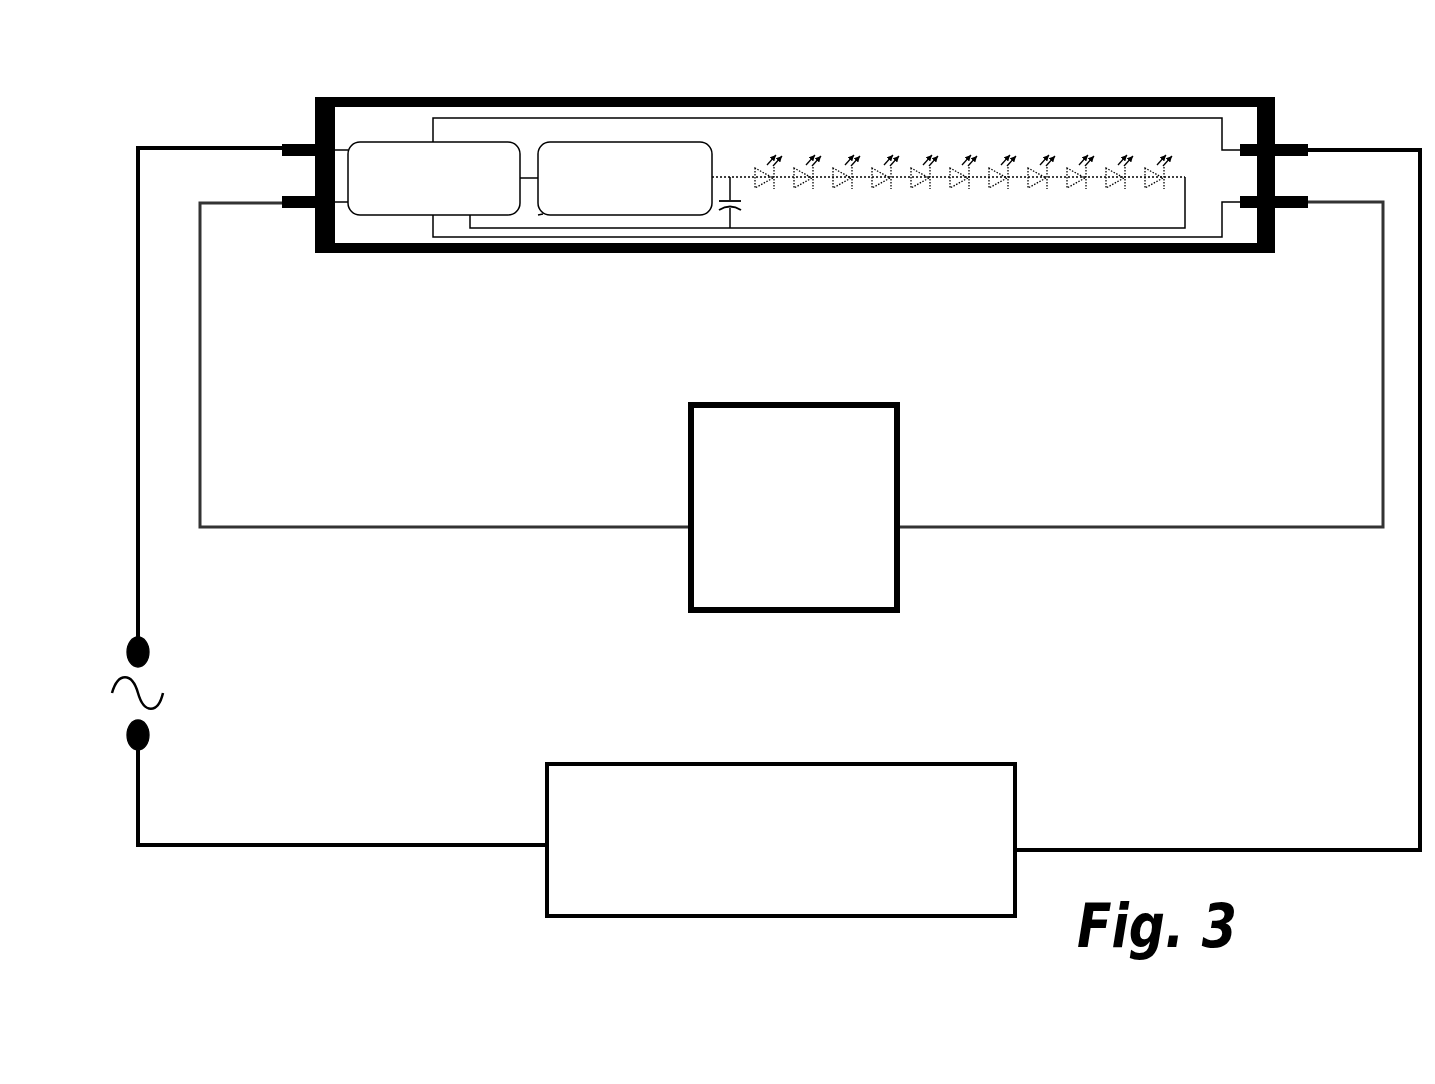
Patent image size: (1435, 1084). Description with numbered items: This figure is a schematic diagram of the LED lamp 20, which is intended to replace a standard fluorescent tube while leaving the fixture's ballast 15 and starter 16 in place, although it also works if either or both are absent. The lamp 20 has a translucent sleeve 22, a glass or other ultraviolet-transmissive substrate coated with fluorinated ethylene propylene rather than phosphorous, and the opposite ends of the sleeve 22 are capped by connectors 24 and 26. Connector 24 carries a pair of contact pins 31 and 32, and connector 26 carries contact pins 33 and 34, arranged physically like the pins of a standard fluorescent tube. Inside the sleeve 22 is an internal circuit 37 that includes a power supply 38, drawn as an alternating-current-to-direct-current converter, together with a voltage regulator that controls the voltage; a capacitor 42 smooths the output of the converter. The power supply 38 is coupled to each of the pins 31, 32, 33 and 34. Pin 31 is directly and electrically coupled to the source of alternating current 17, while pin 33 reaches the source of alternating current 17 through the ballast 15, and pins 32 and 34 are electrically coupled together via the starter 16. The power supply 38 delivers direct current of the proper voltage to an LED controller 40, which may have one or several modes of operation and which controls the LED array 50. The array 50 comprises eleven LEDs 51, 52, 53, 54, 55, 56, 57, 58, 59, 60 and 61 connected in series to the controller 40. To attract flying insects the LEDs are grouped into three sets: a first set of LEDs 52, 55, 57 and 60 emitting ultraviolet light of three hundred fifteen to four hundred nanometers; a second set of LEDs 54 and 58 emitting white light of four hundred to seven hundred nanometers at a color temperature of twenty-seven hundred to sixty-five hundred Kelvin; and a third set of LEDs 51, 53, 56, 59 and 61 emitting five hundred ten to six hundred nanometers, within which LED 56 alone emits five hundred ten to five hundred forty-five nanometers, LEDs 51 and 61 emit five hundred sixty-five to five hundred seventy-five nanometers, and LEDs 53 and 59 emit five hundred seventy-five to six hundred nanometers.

The ballast 15 is at (1003, 760).
The starter 16 is at (684, 567).
The source of alternating current 17 is at (178, 690).
The LED lamp 20 is at (789, 234).
The translucent sleeve 22 is at (785, 221).
The connector 24 is at (319, 257).
The connector 26 is at (1270, 257).
The contact pin 31 is at (295, 142).
The contact pin 32 is at (295, 209).
The contact pin 33 is at (1298, 143).
The contact pin 34 is at (1294, 210).
The internal circuit 37 is at (660, 134).
The power supply 38 is at (387, 216).
The LED controller 40 is at (543, 214).
The capacitor 42 is at (727, 207).
The LED array 50 is at (942, 234).
The LED 51 is at (761, 185).
The LED 52 is at (800, 185).
The LED 53 is at (839, 185).
The LED 54 is at (878, 185).
The LED 55 is at (917, 185).
The LED 56 is at (956, 185).
The LED 57 is at (995, 185).
The LED 58 is at (1034, 185).
The LED 59 is at (1073, 185).
The LED 60 is at (1112, 185).
The LED 61 is at (1151, 185).